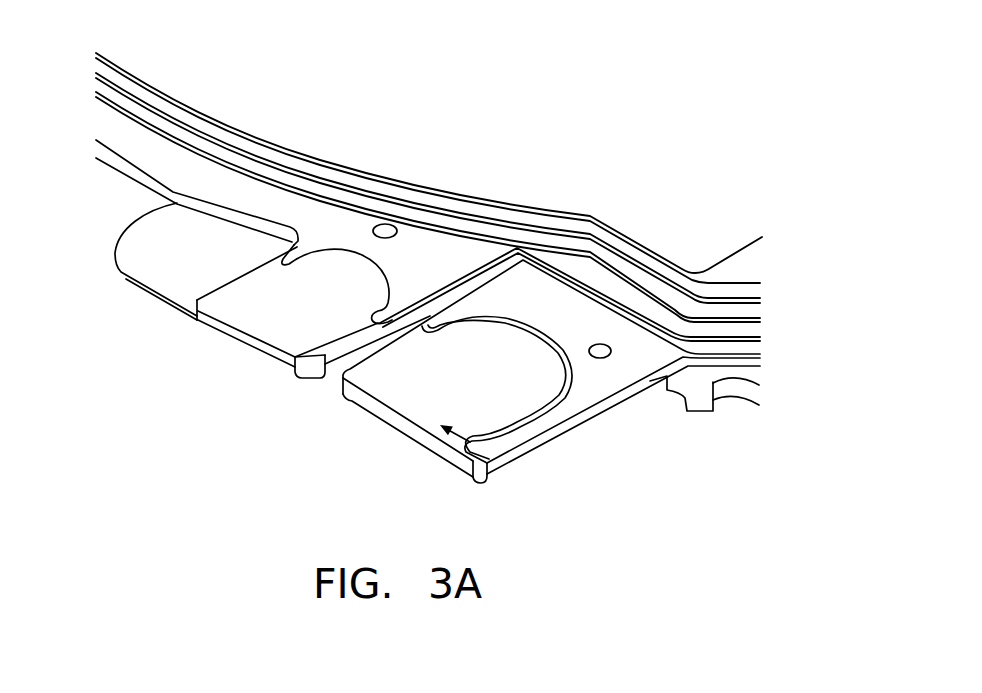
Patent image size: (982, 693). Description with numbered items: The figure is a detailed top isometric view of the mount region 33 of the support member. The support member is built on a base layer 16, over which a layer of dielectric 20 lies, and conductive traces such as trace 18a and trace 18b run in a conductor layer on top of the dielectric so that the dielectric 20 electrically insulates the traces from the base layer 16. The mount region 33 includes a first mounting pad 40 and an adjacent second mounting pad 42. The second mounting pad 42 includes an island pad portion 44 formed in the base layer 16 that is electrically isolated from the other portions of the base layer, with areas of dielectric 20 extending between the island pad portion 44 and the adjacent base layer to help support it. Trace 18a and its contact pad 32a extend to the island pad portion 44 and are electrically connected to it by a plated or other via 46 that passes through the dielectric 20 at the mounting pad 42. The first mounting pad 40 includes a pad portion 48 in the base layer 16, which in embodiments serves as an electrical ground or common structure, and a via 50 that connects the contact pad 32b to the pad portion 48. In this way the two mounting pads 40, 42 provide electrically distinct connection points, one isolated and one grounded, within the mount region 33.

The base layer 16 is at (240, 343).
The trace 18a is at (750, 347).
The trace 18b is at (553, 257).
The dielectric 20 is at (230, 157).
The contact pad 32a is at (577, 323).
The contact pad 32b is at (433, 232).
The mount region 33 is at (260, 438).
The first mounting pad 40 is at (231, 303).
The second mounting pad 42 is at (492, 480).
The island pad portion 44 is at (372, 394).
The via 46 is at (604, 356).
The pad portion 48 is at (310, 343).
The via 50 is at (387, 226).